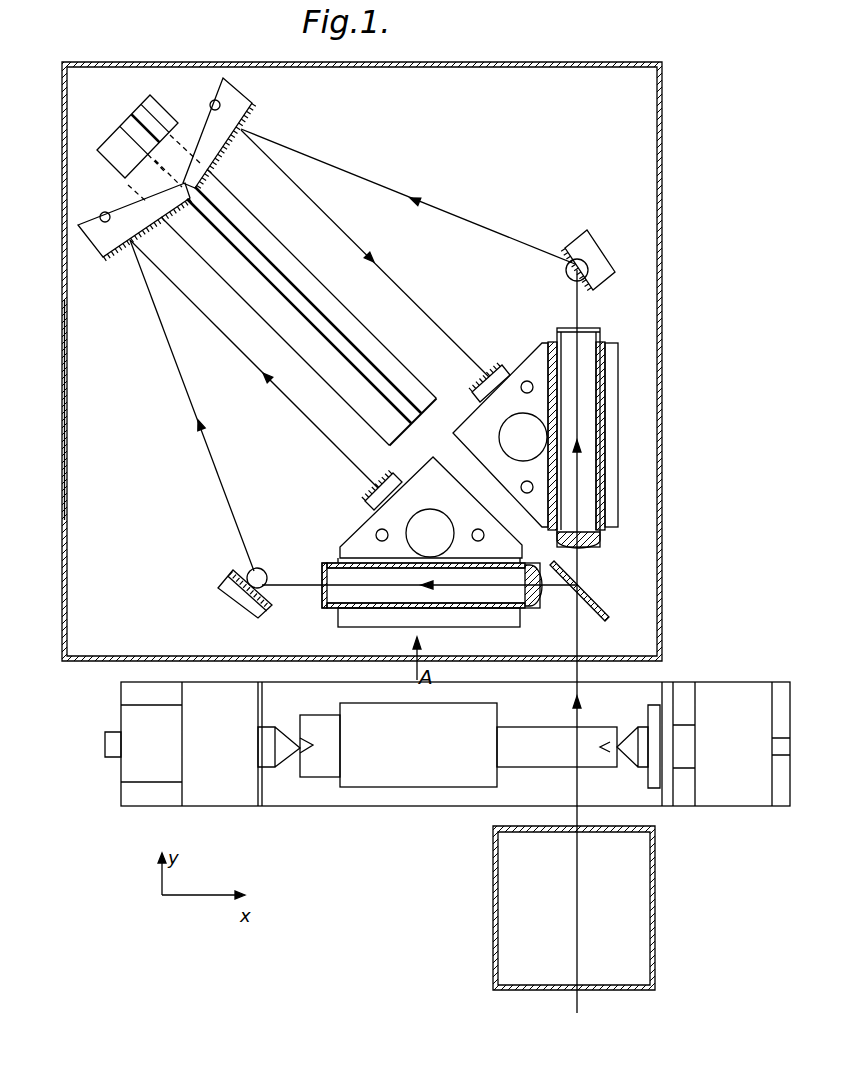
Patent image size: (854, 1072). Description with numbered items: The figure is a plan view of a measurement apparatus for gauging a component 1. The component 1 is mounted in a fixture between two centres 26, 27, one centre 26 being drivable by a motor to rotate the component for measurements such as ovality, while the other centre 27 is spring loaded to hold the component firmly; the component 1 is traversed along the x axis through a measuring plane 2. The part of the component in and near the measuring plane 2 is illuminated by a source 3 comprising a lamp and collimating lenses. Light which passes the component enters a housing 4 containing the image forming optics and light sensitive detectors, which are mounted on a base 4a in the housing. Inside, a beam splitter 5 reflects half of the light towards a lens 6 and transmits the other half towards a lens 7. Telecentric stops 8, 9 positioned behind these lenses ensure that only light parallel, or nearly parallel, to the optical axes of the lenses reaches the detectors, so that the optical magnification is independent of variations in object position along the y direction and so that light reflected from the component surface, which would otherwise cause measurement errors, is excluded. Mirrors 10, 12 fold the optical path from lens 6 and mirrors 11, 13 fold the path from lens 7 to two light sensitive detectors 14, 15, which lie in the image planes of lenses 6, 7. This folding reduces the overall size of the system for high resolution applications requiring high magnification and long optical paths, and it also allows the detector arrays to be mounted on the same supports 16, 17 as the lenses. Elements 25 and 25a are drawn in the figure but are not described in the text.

The component 1 is at (407, 773).
The measuring plane 2 is at (577, 1005).
The source 3 is at (493, 910).
The housing 4 is at (88, 658).
The base 4a is at (102, 520).
The beam splitter 5 is at (607, 614).
The lens 6 is at (542, 597).
The lens 7 is at (592, 548).
The telecentric stop 8 is at (320, 582).
The telecentric stop 9 is at (580, 327).
The mirror 10 is at (275, 608).
The mirror 11 is at (577, 241).
The mirror 12 is at (163, 213).
The mirror 13 is at (212, 169).
The light sensitive detector 14 is at (365, 508).
The light sensitive detector 15 is at (502, 367).
The support 16 is at (428, 473).
The support 17 is at (477, 430).
The mirror holder 25 is at (152, 110).
The tube 25a is at (280, 333).
The centre 26 is at (250, 798).
The centre 27 is at (718, 797).